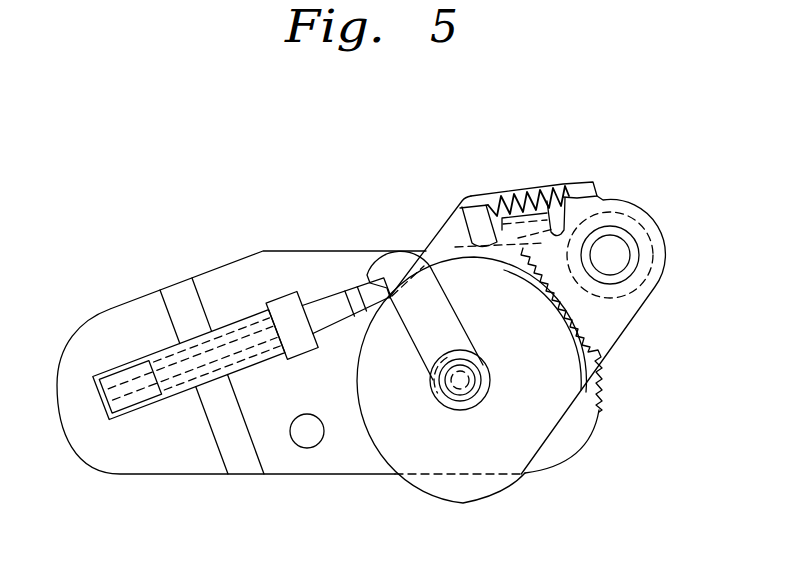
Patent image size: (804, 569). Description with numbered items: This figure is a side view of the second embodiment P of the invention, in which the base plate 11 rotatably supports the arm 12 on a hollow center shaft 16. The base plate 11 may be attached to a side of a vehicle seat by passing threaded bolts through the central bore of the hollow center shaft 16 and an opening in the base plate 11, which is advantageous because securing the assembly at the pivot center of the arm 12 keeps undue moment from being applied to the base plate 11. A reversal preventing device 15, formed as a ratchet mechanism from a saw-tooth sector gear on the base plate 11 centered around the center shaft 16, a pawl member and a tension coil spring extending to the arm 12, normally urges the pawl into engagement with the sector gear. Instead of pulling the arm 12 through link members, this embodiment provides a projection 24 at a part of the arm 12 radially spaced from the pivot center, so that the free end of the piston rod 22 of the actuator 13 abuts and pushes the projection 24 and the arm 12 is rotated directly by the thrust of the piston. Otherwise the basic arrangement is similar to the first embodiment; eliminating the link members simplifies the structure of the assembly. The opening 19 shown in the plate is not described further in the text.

The base plate 11 is at (284, 250).
The arm 12 is at (712, 327).
The actuator 13 is at (160, 340).
The reversal preventing device 15 is at (522, 195).
The hollow center shaft 16 is at (468, 395).
The support hole 19 is at (626, 241).
The piston rod 22 is at (328, 303).
The projection 24 is at (422, 328).
The second embodiment P is at (410, 207).